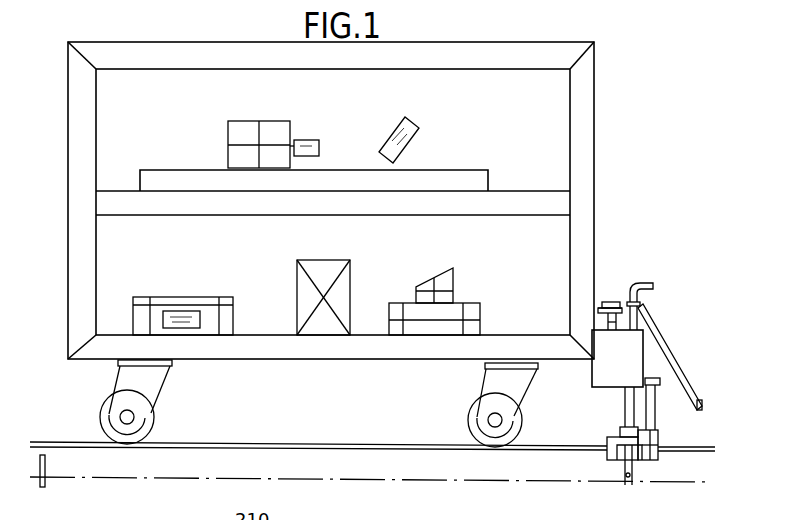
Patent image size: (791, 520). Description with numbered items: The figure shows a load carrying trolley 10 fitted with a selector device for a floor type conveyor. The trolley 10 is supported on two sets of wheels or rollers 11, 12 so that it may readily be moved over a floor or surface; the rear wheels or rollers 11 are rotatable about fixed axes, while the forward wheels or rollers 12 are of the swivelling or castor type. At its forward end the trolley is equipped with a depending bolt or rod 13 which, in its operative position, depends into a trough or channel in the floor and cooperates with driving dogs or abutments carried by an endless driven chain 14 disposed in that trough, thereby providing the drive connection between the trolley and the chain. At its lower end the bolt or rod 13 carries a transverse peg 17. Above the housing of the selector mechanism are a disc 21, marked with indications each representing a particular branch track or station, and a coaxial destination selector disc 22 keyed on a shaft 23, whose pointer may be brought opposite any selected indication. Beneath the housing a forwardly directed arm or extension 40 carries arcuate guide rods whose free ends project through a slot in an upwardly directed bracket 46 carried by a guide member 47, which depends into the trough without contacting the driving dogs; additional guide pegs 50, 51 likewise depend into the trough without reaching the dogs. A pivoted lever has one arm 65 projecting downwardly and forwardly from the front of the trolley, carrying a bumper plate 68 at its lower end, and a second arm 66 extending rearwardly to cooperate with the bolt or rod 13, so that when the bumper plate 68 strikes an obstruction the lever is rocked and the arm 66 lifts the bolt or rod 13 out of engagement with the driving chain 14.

The load carrying trolley 10 is at (587, 105).
The rear wheels or rollers 11 is at (155, 383).
The forward wheels or rollers 12 is at (488, 388).
The bolt or rod 13 is at (628, 300).
The endless driven chain 14 is at (503, 481).
The transverse peg 17 is at (625, 476).
The disc 21 is at (609, 301).
The destination selector disc 22 is at (598, 310).
The shaft 23 is at (603, 322).
The arm or extension 40 is at (649, 372).
The upwardly directed bracket 46 is at (656, 421).
The guide member 47 is at (659, 441).
The additional guide peg 50 is at (608, 457).
The additional guide peg 51 is at (646, 462).
The lever arm 65 is at (655, 323).
The second lever arm 66 is at (641, 300).
The bumper plate 68 is at (704, 398).